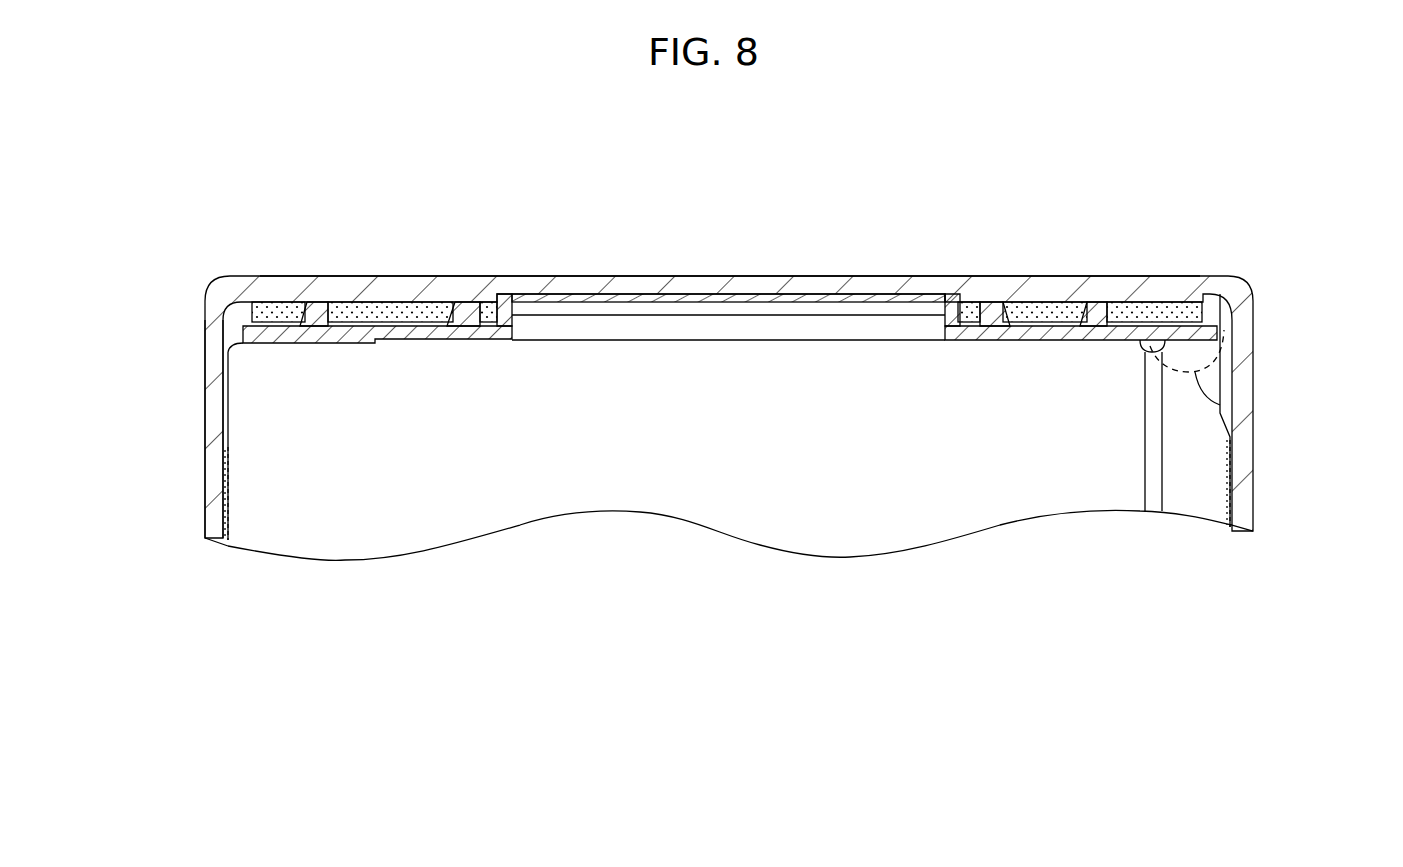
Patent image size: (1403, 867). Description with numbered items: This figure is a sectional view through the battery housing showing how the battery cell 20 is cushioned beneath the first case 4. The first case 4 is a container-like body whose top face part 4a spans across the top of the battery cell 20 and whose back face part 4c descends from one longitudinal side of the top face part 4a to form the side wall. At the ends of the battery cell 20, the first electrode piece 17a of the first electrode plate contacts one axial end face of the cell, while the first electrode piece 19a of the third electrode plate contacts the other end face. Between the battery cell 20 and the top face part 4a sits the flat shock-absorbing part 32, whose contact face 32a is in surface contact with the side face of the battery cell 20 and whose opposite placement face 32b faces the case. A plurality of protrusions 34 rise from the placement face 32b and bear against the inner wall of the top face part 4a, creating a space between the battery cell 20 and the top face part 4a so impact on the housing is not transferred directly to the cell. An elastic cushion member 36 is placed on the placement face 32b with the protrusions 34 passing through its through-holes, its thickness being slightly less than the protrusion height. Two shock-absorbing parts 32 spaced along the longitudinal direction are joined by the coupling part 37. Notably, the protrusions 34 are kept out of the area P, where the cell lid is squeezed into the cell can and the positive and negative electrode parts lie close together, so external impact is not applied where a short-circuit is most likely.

The first case 4 is at (835, 283).
The top face part 4a is at (638, 284).
The back face part 4c is at (215, 397).
The first electrode piece 17a is at (1237, 492).
The first electrode piece 19a is at (222, 470).
The battery cell 20 is at (1190, 446).
The shock-absorbing part 32 is at (731, 417).
The contact face 32a is at (243, 343).
The placement face 32b is at (268, 312).
The protrusion 34 is at (316, 302).
The cushion member 36 is at (392, 302).
The coupling part 37 is at (712, 299).
The area where the cell lid is squeezed into the cell can P is at (1232, 401).